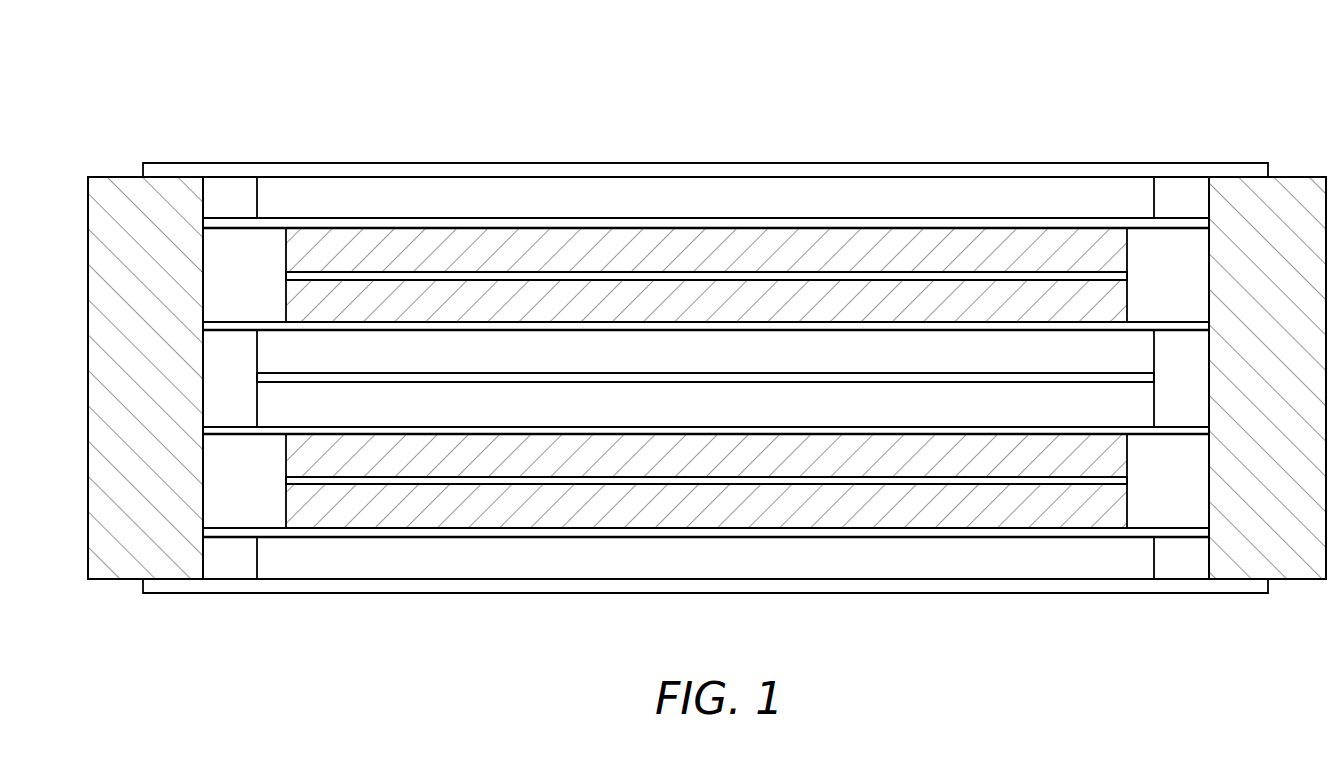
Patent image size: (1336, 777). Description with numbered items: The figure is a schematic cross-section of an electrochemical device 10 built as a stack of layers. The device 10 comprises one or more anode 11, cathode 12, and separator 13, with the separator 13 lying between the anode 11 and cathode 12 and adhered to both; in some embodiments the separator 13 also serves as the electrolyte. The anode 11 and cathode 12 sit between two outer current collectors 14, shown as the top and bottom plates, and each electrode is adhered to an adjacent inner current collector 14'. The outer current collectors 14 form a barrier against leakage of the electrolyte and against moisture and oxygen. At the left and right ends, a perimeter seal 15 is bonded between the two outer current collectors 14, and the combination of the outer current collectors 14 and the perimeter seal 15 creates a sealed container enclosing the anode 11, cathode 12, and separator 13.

The electrochemical device 10 is at (832, 120).
The anode 11 is at (1155, 186).
The cathode 12 is at (1127, 247).
The separator 13 is at (203, 224).
The outer current collector 14 is at (705, 381).
The inner current collector 14' is at (654, 389).
The perimeter seal 15 is at (111, 580).